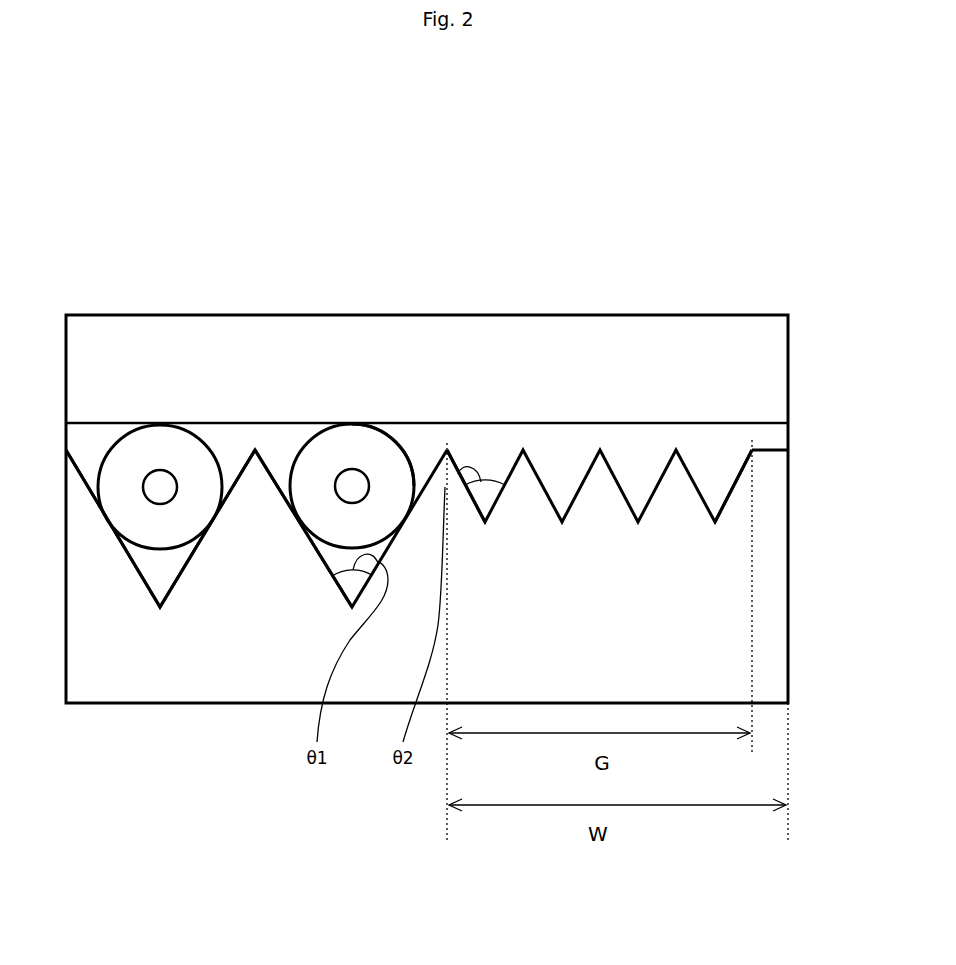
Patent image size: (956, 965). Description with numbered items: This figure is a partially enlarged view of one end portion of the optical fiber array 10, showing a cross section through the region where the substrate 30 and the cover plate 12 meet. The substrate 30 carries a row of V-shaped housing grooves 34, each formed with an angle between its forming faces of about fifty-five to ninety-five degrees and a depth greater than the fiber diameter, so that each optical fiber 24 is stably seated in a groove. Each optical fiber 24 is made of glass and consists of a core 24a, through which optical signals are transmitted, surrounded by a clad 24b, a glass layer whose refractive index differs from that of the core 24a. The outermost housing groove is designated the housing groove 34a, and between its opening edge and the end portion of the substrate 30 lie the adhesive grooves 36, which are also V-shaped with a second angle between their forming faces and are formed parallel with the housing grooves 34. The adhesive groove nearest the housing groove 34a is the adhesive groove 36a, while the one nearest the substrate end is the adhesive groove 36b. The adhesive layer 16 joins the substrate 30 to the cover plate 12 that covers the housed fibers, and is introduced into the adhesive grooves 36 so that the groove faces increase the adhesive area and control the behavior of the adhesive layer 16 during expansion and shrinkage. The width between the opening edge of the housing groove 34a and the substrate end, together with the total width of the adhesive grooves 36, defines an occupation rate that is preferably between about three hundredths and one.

The optical fiber array 10 is at (446, 197).
The cover plate 12 is at (112, 380).
The adhesive layer 16 is at (765, 445).
The optical fiber 24 is at (300, 445).
The core 24a is at (352, 467).
The clad 24b is at (397, 480).
The substrate 30 is at (767, 570).
The housing groove 34 is at (138, 553).
The outermost housing groove 34a is at (320, 552).
The adhesive groove 36 is at (455, 282).
The adhesive groove near outermost housing groove 36a is at (458, 473).
The adhesive groove near substrate end portion 36b is at (687, 468).